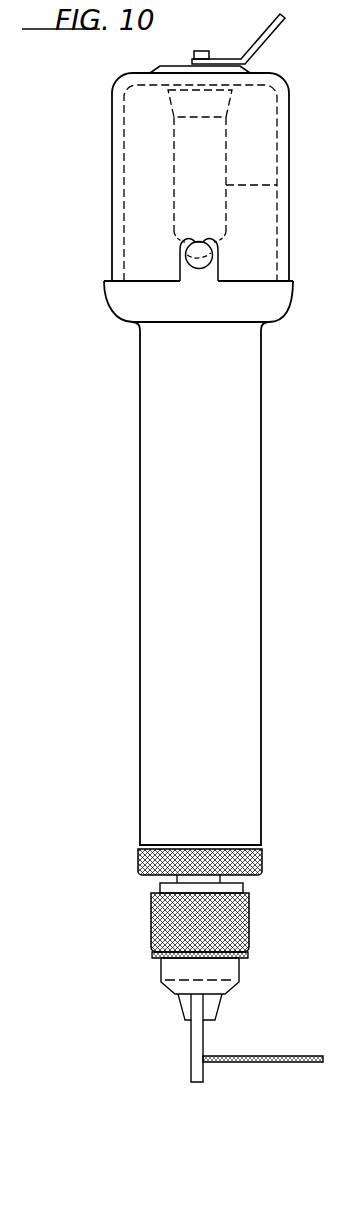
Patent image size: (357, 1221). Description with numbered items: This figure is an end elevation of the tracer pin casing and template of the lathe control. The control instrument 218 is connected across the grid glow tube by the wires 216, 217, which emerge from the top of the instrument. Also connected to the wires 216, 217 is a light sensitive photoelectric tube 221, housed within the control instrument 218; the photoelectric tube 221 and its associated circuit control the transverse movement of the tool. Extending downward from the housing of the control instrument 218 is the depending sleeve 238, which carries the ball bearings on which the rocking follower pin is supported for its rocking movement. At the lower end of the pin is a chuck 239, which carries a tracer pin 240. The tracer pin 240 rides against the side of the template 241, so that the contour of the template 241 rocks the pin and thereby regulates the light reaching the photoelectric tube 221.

The wire 216 is at (284, 24).
The wire 217 is at (284, 28).
The control instrument 218 is at (112, 220).
The light sensitive photoelectric tube 221 is at (277, 185).
The depending sleeve 238 is at (140, 579).
The chuck 239 is at (190, 1008).
The tracer pin 240 is at (190, 1068).
The template 241 is at (276, 1066).